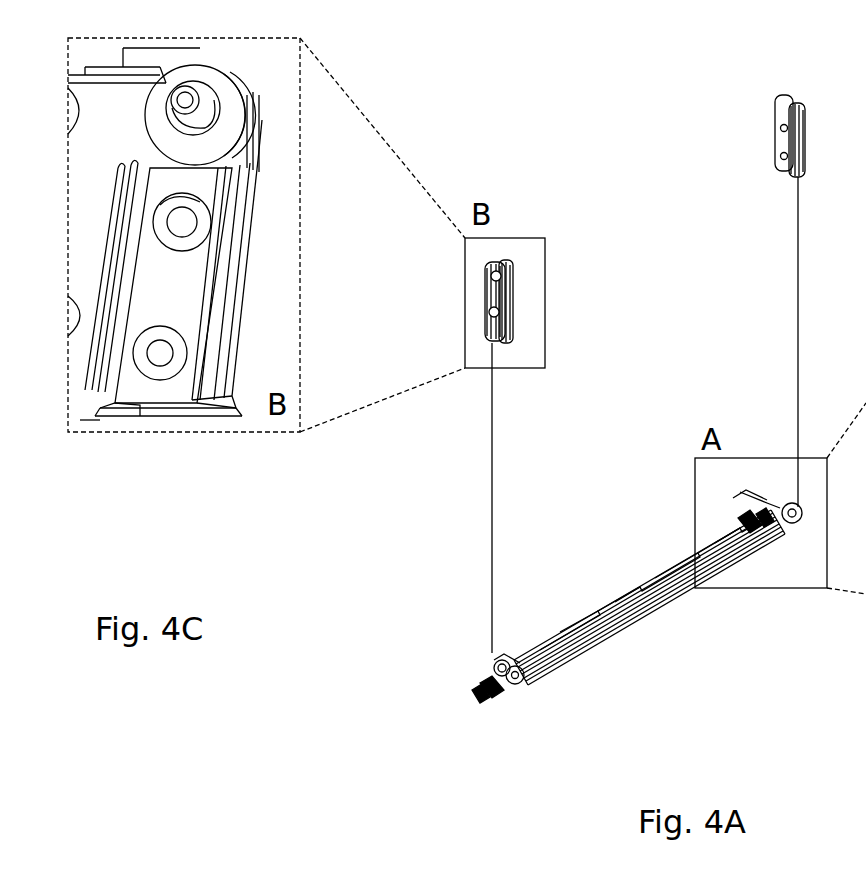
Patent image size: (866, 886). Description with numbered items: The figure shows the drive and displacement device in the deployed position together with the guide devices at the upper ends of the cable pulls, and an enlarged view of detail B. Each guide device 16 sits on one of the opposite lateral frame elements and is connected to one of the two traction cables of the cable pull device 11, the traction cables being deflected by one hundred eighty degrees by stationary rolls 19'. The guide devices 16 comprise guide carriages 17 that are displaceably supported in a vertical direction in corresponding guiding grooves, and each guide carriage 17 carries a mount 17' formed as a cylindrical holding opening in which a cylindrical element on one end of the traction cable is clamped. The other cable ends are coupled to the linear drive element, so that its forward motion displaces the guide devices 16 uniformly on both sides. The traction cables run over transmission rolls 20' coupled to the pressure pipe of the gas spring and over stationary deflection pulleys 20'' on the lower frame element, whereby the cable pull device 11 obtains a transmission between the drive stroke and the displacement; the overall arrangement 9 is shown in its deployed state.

In FIG. 4A, the tensioning assembly 9 is at (601, 153).
In FIG. 4A, the cable pull device 11 is at (621, 634).
In FIG. 4A, the guide device 16 is at (771, 187).
In FIG. 4C, the guide carriage 17 is at (116, 478).
In FIG. 4A, the guide carriage 17 is at (639, 218).
In FIG. 4C, the mount 17' is at (218, 475).
In FIG. 4C, the stationary roll 19' is at (296, 114).
In FIG. 4A, the transmission roll 20' is at (771, 582).
In FIG. 4A, the deflection pulley 20'' is at (458, 726).